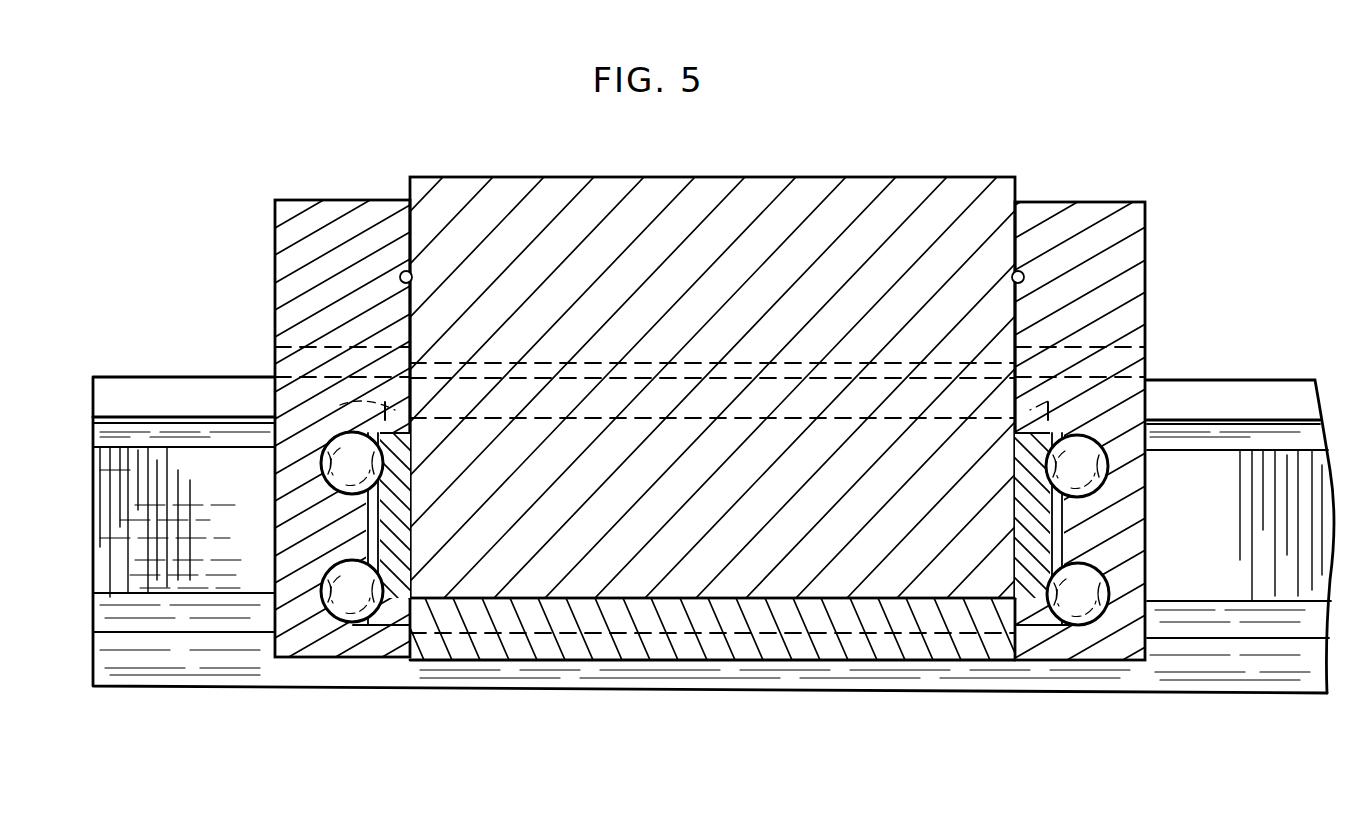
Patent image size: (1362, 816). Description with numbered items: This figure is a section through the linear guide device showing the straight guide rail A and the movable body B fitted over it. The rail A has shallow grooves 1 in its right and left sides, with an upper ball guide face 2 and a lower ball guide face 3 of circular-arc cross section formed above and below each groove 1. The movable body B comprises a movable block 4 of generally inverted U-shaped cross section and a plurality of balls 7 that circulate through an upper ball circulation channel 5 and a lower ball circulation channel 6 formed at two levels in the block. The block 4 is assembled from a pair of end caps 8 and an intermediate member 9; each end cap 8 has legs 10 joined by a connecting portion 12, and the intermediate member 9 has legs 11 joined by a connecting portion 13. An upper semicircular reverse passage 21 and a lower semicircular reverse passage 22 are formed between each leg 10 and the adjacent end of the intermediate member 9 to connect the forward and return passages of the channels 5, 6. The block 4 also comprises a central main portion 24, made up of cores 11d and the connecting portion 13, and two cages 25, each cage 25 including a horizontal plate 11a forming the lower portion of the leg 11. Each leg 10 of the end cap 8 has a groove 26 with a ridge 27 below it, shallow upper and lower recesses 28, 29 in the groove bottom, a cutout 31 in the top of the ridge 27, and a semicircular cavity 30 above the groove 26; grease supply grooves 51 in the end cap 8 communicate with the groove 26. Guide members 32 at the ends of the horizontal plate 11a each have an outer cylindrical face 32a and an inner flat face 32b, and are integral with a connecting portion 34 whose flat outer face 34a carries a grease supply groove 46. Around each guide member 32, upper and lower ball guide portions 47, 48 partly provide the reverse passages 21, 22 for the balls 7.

The shallow groove 1 is at (150, 462).
The upper ball guide face 2 is at (1300, 442).
The lower ball guide face 3 is at (1300, 618).
The movable block 4 is at (797, 177).
The upper ball circulation channel 5 is at (1108, 470).
The lower ball circulation channel 6 is at (1148, 612).
The ball 7 is at (340, 617).
The end cap 8 is at (348, 200).
The intermediate member 9 is at (681, 354).
The end cap leg 10 is at (283, 650).
The intermediate member leg 11 is at (750, 662).
The horizontal plate 11a is at (607, 660).
The core 11d is at (885, 598).
The end cap connecting portion 12 is at (288, 200).
The intermediate member connecting portion 13 is at (566, 184).
The upper reverse passage 21 is at (340, 443).
The lower reverse passage 22 is at (352, 612).
The central main portion 24 is at (731, 177).
The cage 25 is at (547, 662).
The groove 26 is at (405, 505).
The ridge 27 is at (437, 655).
The upper recess 28 is at (325, 460).
The lower recess 29 is at (328, 600).
The semicircular cavity 30 is at (383, 405).
The cutout 31 is at (388, 625).
The guide member 32 is at (410, 412).
The cylindrical face 32a is at (395, 560).
The flat face 32b is at (400, 520).
The connecting portion 34 is at (365, 555).
The flat outer face 34a is at (365, 530).
The grease supply groove 46 is at (367, 520).
The upper ball guide portion 47 is at (400, 436).
The lower ball guide portion 48 is at (412, 578).
The grease supply groove 51 is at (412, 277).
The guide rail A is at (1258, 693).
The movable body B is at (680, 177).